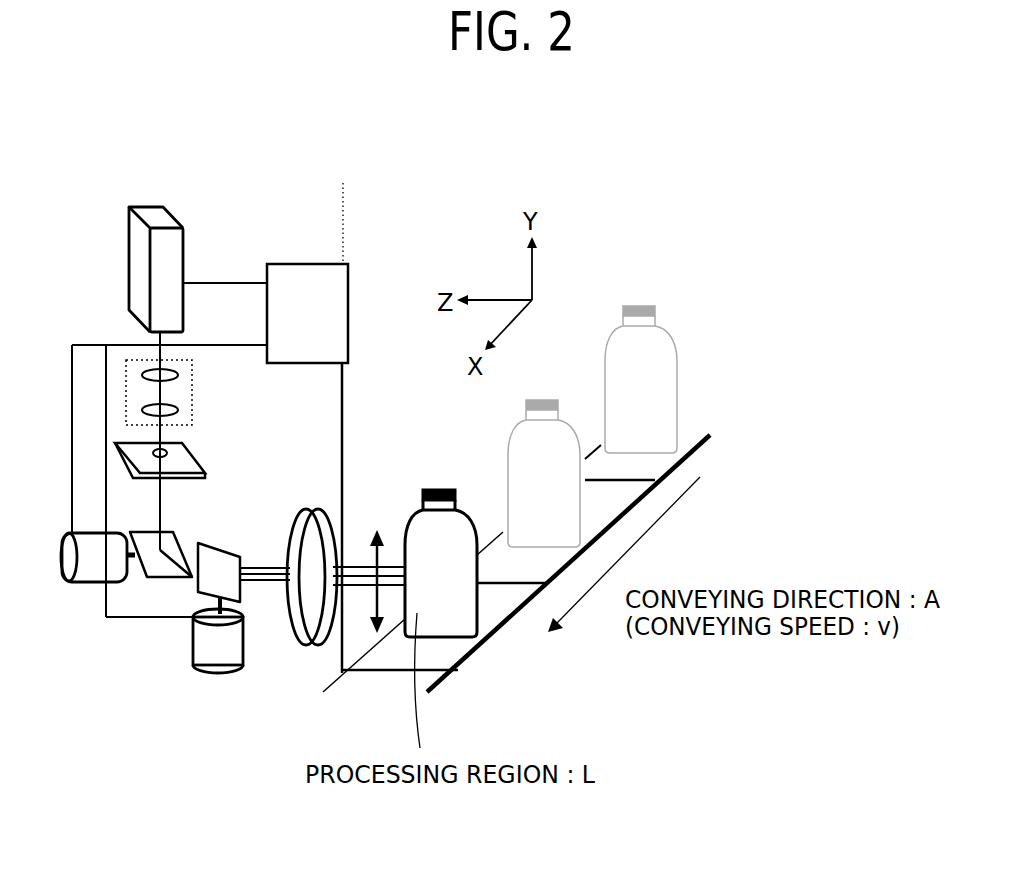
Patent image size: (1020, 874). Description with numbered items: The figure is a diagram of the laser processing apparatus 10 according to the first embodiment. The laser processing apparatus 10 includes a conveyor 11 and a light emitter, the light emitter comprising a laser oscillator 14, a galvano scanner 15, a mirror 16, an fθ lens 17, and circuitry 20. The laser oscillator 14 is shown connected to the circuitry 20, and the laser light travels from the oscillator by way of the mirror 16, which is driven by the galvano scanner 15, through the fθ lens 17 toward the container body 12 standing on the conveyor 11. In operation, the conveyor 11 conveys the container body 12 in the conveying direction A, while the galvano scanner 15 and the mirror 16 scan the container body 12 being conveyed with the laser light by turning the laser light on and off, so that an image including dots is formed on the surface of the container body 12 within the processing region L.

The laser processing apparatus 10 is at (322, 194).
The conveyor 11 is at (468, 660).
The container body 12 is at (420, 520).
The laser oscillator 14 is at (137, 268).
The galvano scanner 15 is at (90, 573).
The mirror 16 is at (178, 540).
The fθ lens 17 is at (310, 645).
The circuitry 20 is at (348, 285).